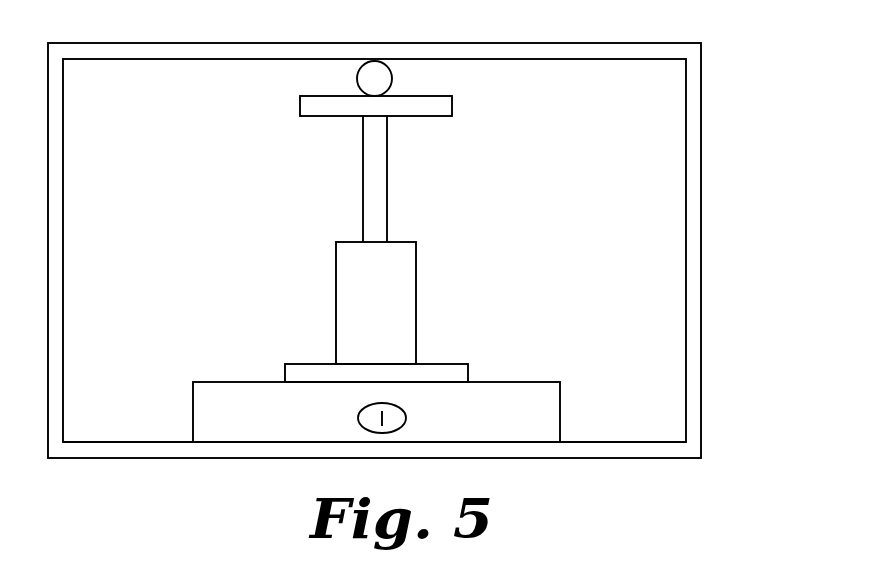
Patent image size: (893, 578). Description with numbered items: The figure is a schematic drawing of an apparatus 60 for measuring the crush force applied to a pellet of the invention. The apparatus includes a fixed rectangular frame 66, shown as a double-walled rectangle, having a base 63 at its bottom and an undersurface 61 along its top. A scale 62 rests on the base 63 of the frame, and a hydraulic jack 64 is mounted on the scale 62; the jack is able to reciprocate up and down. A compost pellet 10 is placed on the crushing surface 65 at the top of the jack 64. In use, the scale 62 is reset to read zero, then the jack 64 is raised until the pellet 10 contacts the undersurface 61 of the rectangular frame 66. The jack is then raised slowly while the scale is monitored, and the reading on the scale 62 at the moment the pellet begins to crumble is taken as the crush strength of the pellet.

The compost pellet 10 is at (393, 75).
The apparatus 60 is at (425, 229).
The undersurface 61 is at (569, 62).
The scale 62 is at (498, 395).
The base 63 is at (637, 442).
The hydraulic jack 64 is at (403, 278).
The crushing surface 65 is at (315, 96).
The rectangular frame 66 is at (670, 43).